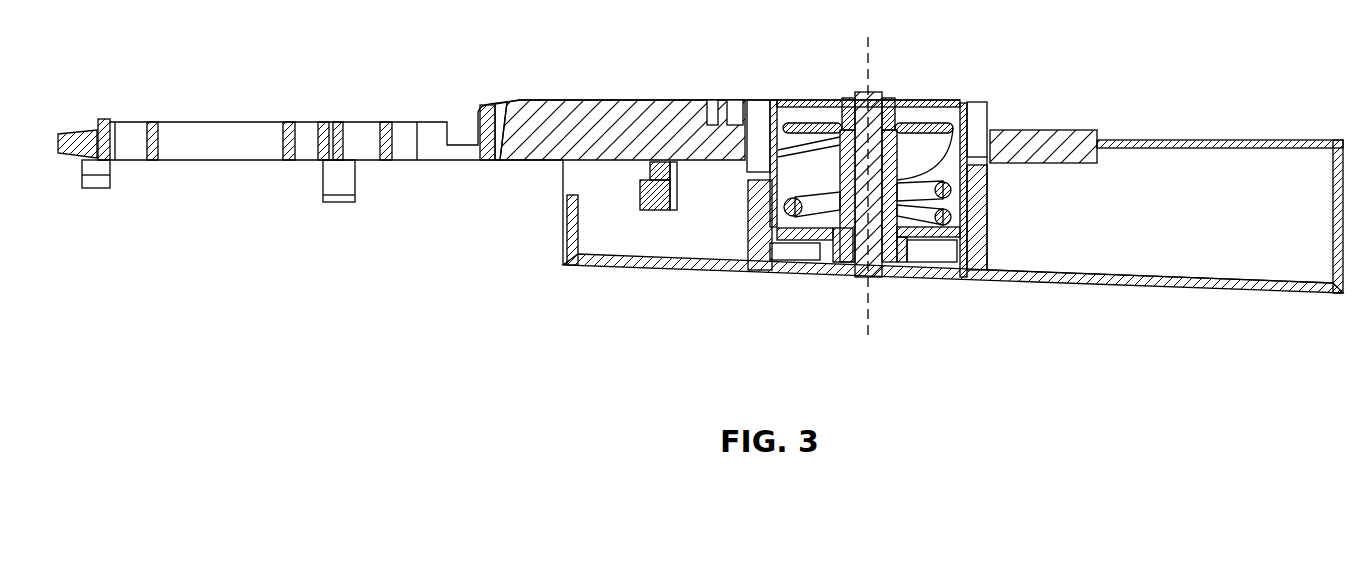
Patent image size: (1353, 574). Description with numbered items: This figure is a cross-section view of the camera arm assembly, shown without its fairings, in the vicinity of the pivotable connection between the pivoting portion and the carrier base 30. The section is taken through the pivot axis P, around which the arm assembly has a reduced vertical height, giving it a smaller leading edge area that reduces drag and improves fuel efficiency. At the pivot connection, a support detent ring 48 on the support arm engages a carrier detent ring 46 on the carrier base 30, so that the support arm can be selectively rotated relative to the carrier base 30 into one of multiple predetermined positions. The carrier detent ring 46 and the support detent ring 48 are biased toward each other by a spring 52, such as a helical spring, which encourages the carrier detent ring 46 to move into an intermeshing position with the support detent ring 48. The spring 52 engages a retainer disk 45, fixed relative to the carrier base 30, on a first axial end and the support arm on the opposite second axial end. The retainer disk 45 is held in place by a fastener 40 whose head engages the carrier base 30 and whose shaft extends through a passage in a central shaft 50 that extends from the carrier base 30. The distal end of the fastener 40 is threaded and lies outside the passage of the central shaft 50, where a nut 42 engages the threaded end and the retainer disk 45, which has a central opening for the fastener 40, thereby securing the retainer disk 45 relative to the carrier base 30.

The carrier base 30 is at (152, 122).
The fastener 40 is at (857, 270).
The nut 42 is at (887, 102).
The retainer disk 45 is at (813, 120).
The carrier detent ring 46 is at (986, 287).
The support detent ring 48 is at (992, 127).
The central shaft 50 is at (953, 120).
The spring 52 is at (918, 220).
The pivot axis P is at (866, 315).